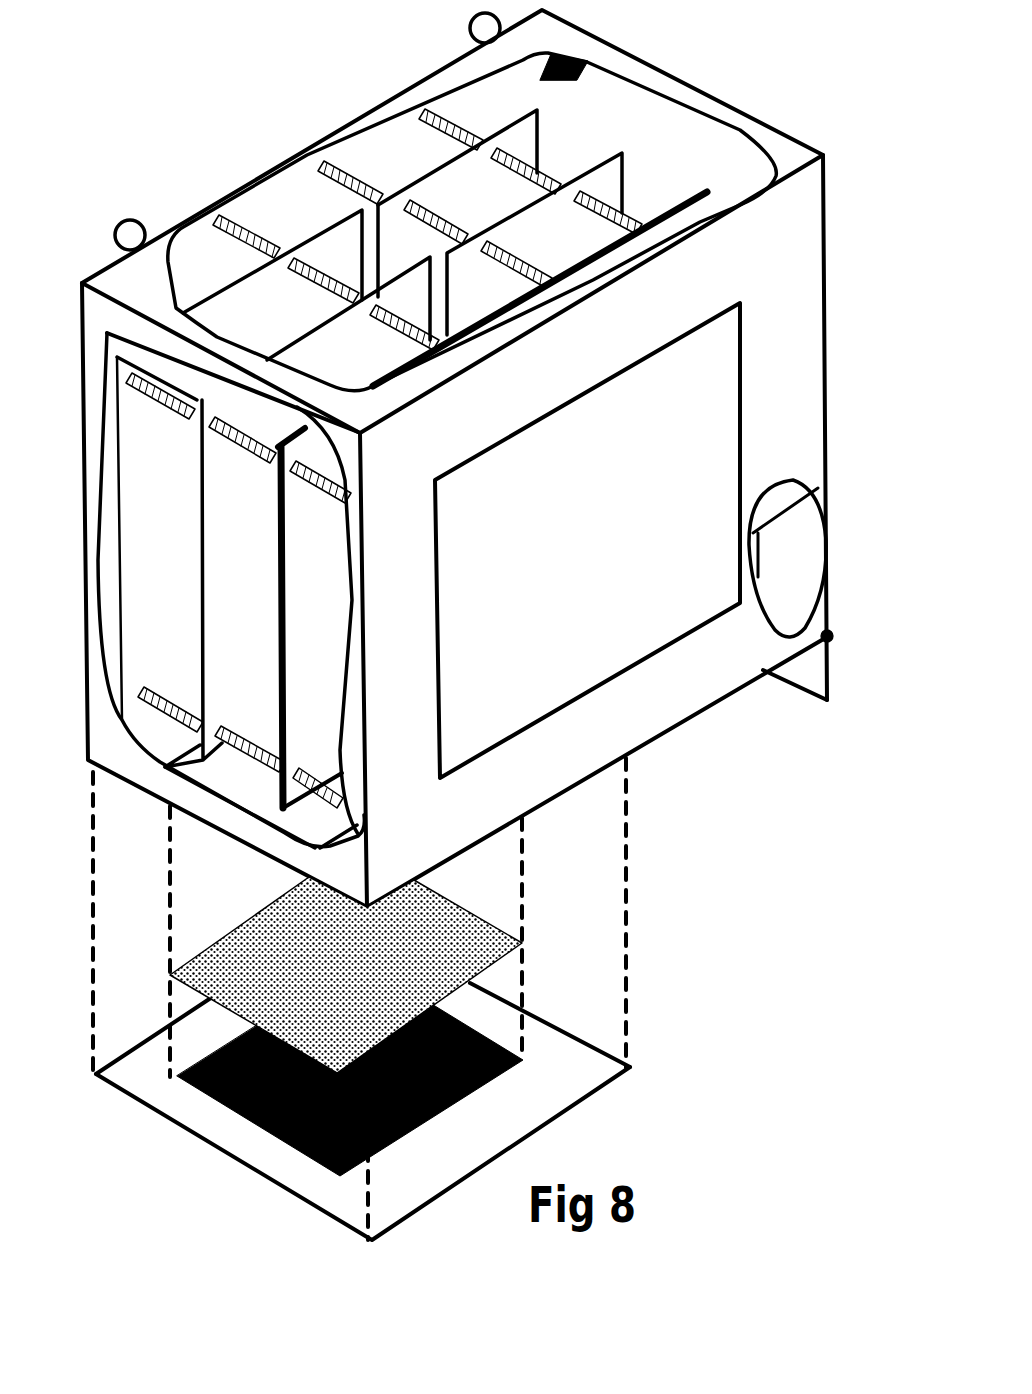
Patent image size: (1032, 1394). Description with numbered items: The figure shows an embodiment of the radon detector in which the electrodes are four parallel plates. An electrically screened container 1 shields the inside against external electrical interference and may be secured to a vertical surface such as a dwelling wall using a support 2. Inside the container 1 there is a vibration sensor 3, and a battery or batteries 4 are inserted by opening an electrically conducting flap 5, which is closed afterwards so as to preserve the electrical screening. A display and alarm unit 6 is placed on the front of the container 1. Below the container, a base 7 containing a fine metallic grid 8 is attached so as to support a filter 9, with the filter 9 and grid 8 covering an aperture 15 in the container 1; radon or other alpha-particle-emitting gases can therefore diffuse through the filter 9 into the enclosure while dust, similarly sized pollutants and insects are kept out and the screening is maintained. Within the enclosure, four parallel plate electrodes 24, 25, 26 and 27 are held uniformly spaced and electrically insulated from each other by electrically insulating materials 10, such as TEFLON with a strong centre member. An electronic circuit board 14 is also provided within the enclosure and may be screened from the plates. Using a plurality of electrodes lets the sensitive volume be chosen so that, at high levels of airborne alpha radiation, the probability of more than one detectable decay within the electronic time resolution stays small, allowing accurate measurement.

The electrically screened container 1 is at (83, 278).
The support 2 is at (128, 218).
The vibration sensor 3 is at (587, 63).
The battery 4 is at (802, 537).
The electrically conducting flap 5 is at (830, 705).
The display and alarm unit 6 is at (730, 578).
The base 7 is at (627, 1085).
The fine metallic grid 8 is at (417, 1132).
The filter 9 is at (496, 965).
The electrically insulating materials 10 is at (420, 120).
The electronic circuit board 14 is at (272, 651).
The aperture 15 is at (220, 802).
The parallel plate electrode 24 is at (118, 545).
The parallel plate electrode 25 is at (197, 596).
The parallel plate electrode 26 is at (545, 120).
The parallel plate electrode 27 is at (625, 153).